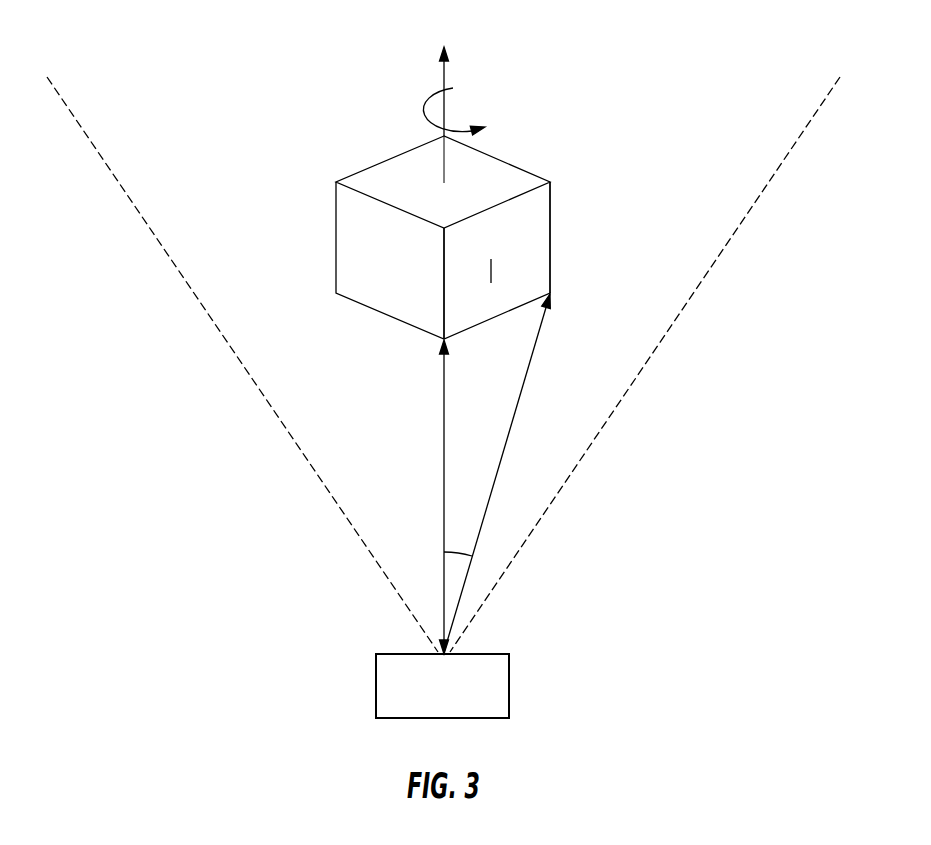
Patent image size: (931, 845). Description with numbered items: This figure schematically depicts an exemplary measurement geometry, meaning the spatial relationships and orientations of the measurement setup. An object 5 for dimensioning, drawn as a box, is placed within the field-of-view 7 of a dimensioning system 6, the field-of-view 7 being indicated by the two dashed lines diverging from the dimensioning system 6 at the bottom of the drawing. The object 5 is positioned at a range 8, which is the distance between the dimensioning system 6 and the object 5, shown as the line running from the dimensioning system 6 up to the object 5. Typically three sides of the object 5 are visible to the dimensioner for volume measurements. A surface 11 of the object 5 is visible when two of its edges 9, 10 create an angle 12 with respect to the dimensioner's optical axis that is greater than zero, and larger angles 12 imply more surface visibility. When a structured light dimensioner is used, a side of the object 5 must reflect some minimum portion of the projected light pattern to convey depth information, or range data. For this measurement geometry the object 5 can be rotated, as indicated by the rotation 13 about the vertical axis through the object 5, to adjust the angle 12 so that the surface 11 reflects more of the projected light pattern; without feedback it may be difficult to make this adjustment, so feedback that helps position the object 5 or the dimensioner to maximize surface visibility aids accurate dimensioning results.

The object 5 is at (328, 174).
The dimensioning system 6 is at (364, 673).
The field-of-view 7 is at (70, 104).
The range 8 is at (432, 458).
The edge 9 is at (432, 270).
The edge 10 is at (538, 252).
The surface 11 is at (508, 275).
The angle 12 is at (456, 540).
The rotation 13 is at (420, 86).